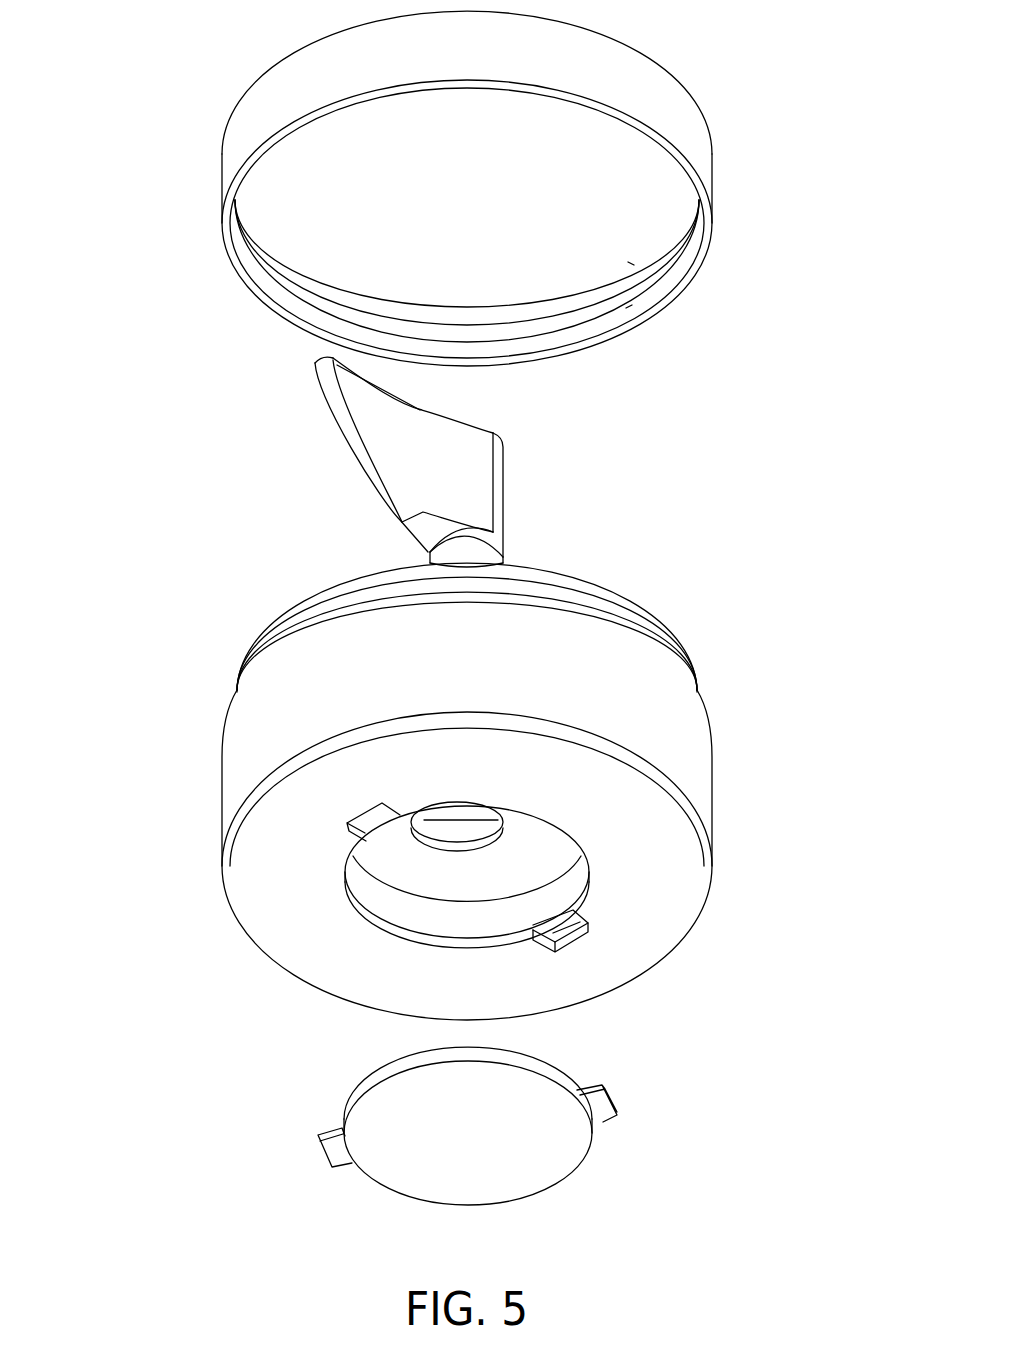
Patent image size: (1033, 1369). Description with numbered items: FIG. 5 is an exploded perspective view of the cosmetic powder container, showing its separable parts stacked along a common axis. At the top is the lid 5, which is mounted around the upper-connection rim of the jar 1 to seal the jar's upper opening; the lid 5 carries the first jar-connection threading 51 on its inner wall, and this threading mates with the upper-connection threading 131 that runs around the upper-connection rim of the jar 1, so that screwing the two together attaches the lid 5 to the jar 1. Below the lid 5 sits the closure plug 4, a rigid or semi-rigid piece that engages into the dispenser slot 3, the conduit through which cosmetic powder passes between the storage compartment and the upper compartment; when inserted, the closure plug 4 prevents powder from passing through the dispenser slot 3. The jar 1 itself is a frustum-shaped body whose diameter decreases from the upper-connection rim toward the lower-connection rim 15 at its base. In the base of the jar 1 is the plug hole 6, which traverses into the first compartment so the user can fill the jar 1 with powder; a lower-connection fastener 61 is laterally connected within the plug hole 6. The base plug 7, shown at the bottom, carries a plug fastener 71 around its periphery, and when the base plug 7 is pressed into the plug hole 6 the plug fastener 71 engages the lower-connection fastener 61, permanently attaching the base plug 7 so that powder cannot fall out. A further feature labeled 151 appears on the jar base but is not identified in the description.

The jar 1 is at (454, 800).
The dispenser slot 3 is at (473, 827).
The closure plug 4 is at (505, 512).
The lid 5 is at (705, 172).
The plug hole 6 is at (530, 865).
The base plug 7 is at (540, 1149).
The lower-connection rim 15 is at (248, 918).
The first jar-connection threading 51 is at (307, 303).
The lower-connection fastener 61 is at (347, 825).
The plug fastener 71 is at (617, 1103).
The upper-connection threading 131 is at (255, 647).
The bottom surface 151 is at (628, 945).